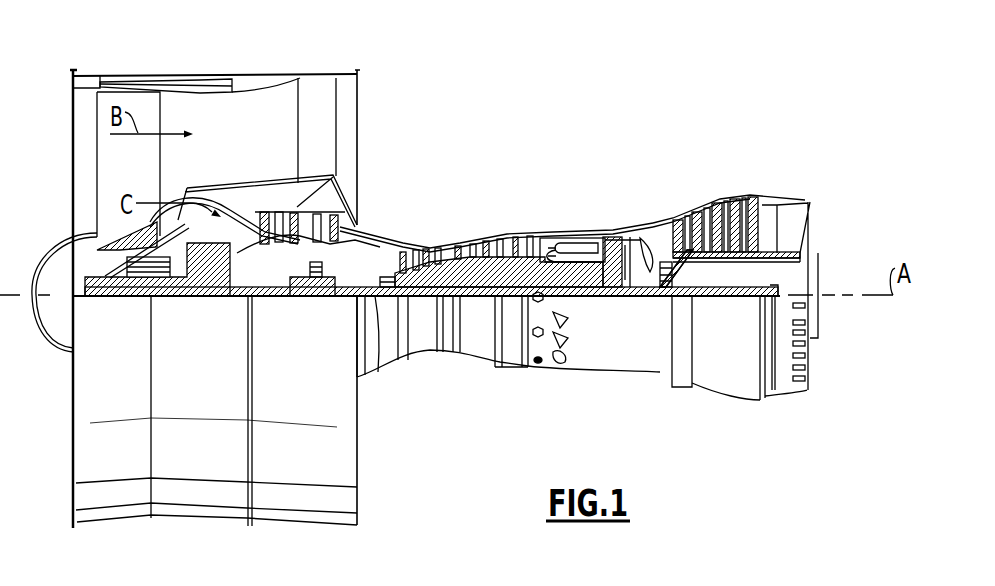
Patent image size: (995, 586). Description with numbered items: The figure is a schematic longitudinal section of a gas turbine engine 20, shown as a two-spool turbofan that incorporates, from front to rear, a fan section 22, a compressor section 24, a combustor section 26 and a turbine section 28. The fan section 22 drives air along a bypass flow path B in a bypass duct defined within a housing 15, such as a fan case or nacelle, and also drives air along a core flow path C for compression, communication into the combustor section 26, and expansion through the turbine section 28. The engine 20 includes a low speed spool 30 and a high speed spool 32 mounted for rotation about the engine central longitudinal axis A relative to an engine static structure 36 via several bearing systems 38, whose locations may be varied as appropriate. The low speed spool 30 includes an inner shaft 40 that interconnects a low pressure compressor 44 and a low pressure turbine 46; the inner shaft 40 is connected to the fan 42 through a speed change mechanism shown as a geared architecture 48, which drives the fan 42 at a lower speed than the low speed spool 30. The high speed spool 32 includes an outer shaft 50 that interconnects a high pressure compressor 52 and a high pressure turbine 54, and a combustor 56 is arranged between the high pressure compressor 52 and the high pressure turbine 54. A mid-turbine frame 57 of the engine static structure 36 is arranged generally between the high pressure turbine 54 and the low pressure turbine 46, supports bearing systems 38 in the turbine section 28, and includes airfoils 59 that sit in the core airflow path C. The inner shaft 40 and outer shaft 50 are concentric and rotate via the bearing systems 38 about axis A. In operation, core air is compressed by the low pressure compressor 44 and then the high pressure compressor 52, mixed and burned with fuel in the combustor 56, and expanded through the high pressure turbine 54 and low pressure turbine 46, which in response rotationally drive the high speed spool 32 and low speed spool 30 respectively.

The housing 15 is at (218, 78).
The gas turbine engine 20 is at (583, 106).
The fan section 22 is at (158, 62).
The compressor section 24 is at (395, 212).
The combustor section 26 is at (573, 206).
The turbine section 28 is at (696, 170).
The low speed spool 30 is at (479, 306).
The high speed spool 32 is at (517, 252).
The engine static structure 36 is at (513, 372).
The bearing systems 38 is at (326, 297).
The inner shaft 40 is at (378, 370).
The fan 42 is at (147, 178).
The low pressure compressor 44 is at (332, 183).
The low pressure turbine 46 is at (718, 205).
The geared architecture 48 is at (220, 290).
The outer shaft 50 is at (575, 296).
The high pressure compressor 52 is at (455, 250).
The high pressure turbine 54 is at (656, 236).
The combustor 56 is at (577, 248).
The mid-turbine frame 57 is at (660, 218).
The airfoils 59 is at (674, 258).